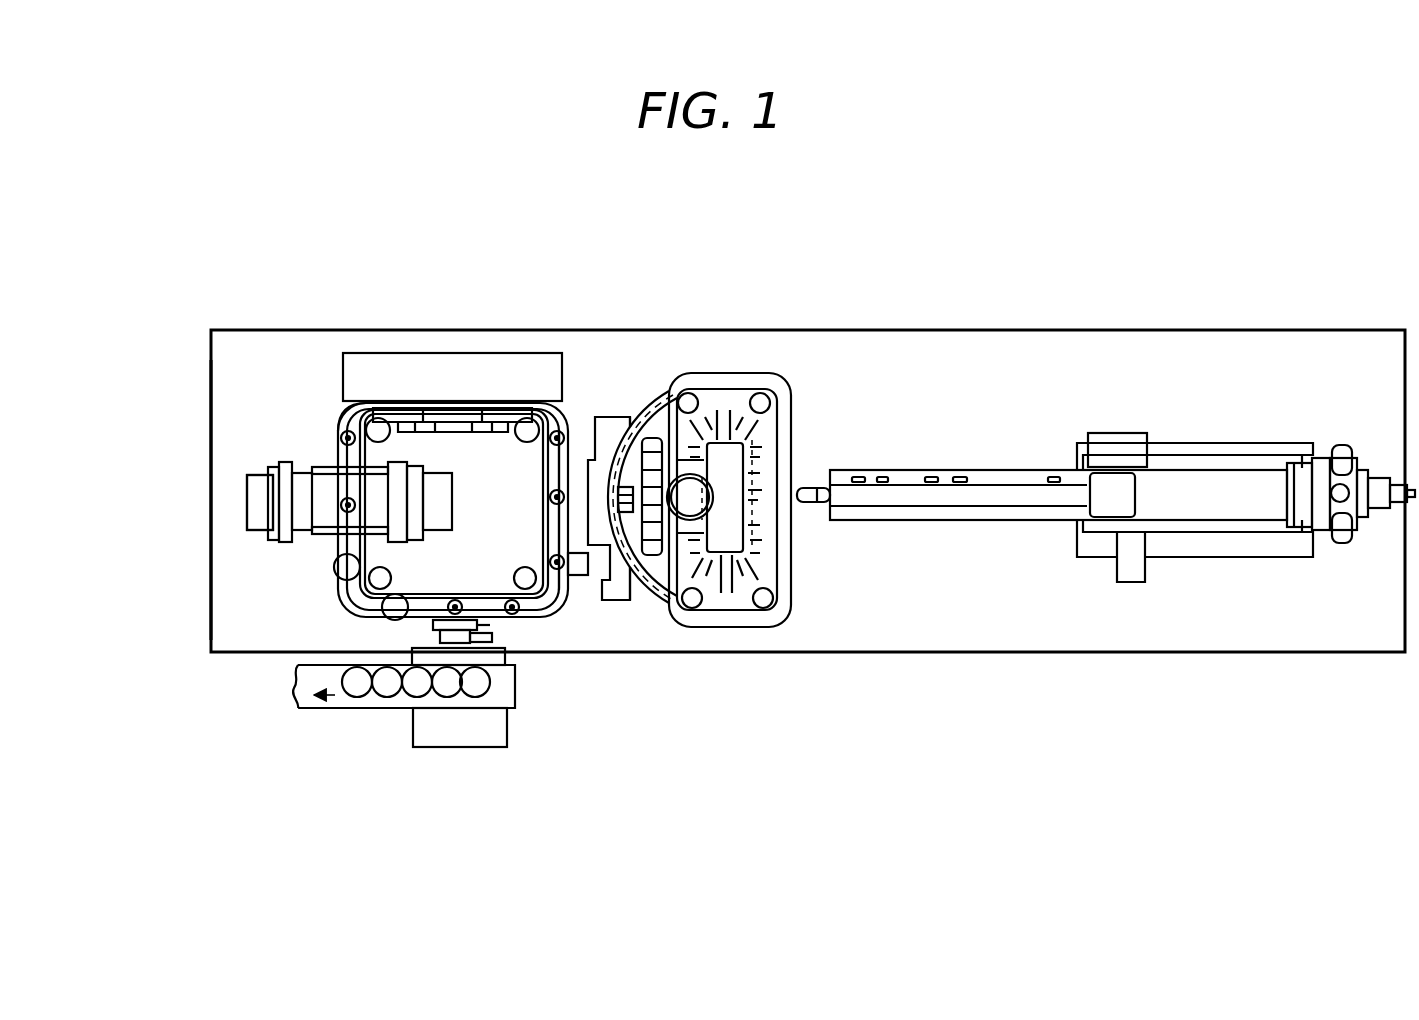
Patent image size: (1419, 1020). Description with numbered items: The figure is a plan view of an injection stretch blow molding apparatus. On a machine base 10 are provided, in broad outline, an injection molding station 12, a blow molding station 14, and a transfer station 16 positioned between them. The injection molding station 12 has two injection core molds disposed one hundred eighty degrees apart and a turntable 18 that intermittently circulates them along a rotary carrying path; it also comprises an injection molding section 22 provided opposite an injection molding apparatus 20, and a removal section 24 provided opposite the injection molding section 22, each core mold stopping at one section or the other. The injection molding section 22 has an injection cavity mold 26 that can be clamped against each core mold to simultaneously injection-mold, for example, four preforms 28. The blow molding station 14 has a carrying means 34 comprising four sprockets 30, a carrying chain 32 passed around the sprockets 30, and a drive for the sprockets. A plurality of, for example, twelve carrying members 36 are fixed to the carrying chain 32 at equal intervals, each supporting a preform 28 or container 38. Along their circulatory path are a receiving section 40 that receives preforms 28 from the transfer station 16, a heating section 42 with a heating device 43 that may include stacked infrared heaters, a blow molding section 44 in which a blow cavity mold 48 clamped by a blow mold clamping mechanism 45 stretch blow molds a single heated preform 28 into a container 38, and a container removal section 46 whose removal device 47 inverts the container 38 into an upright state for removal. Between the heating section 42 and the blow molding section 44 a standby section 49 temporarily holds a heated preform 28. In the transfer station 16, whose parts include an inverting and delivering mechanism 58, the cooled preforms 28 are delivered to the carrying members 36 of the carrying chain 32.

The machine base 10 is at (892, 338).
The injection molding station 12 is at (733, 311).
The blow molding station 14 is at (462, 308).
The transfer station 16 is at (622, 622).
The turntable 18 is at (712, 398).
The injection molding apparatus 20 is at (1000, 468).
The injection molding section 22 is at (783, 455).
The removal section 24 is at (645, 416).
The injection cavity mold 26 is at (781, 543).
The preform 28 is at (582, 432).
The sprocket 30 is at (385, 434).
The carrying chain 32 is at (330, 578).
The carrying means 34 is at (335, 613).
The carrying member 36 is at (527, 623).
The container 38 is at (333, 567).
The receiving section 40 is at (534, 540).
The heating section 42 is at (499, 348).
The heating device 43 is at (407, 365).
The blow molding section 44 is at (250, 438).
The blow mold clamping mechanism 45 is at (260, 513).
The container removal section 46 is at (391, 632).
The removal device 47 is at (467, 642).
The blow cavity mold 48 is at (380, 490).
The standby section 49 is at (323, 397).
The inverting and delivering mechanism 58 is at (580, 583).